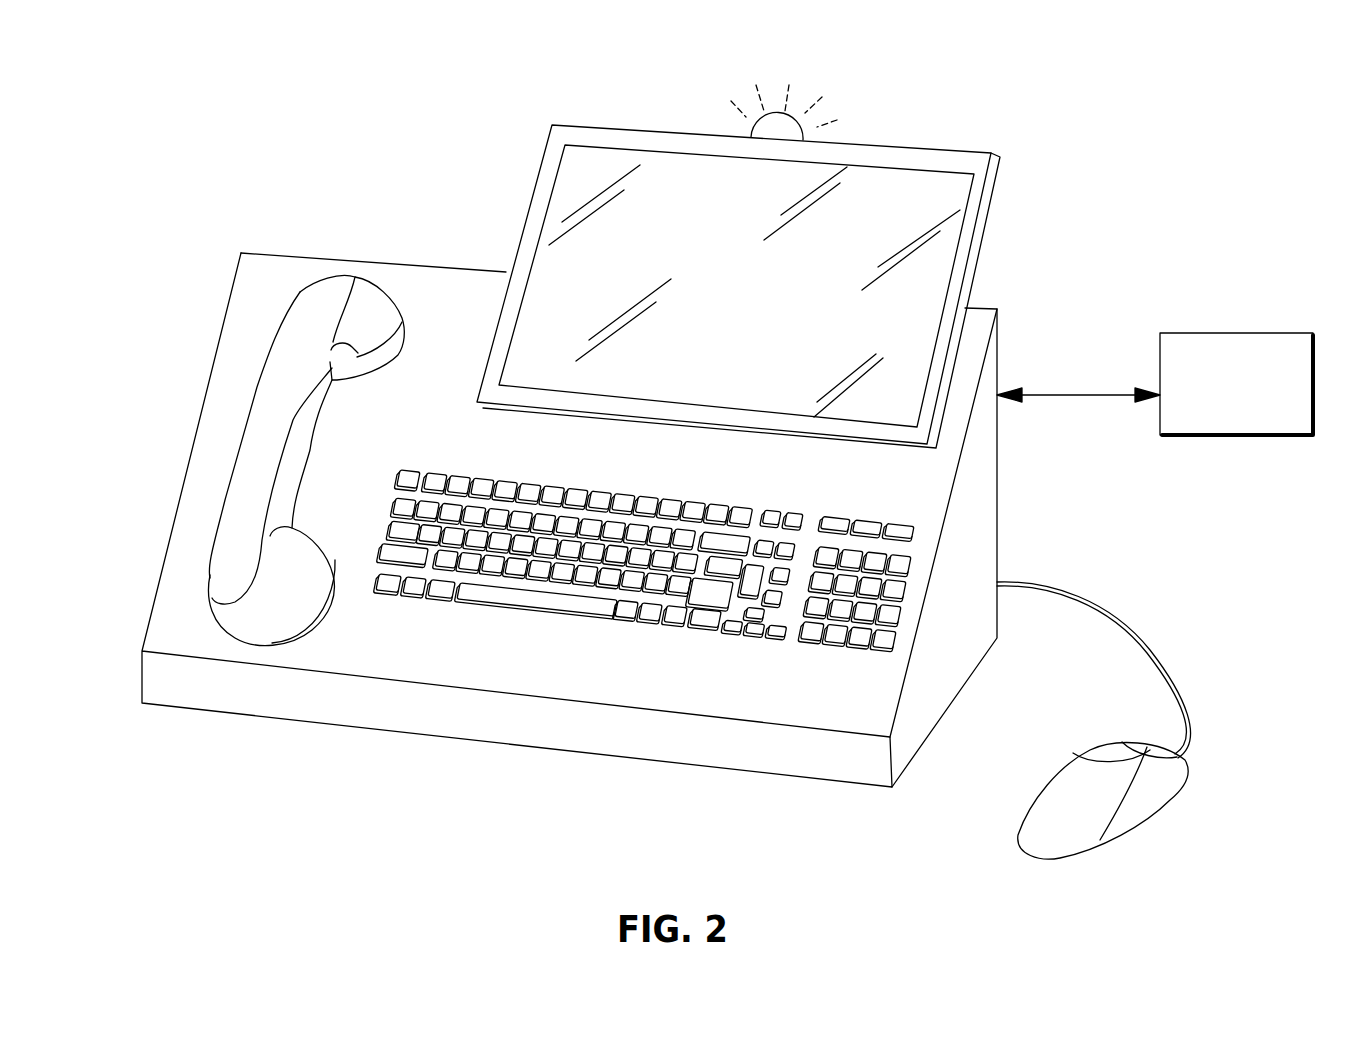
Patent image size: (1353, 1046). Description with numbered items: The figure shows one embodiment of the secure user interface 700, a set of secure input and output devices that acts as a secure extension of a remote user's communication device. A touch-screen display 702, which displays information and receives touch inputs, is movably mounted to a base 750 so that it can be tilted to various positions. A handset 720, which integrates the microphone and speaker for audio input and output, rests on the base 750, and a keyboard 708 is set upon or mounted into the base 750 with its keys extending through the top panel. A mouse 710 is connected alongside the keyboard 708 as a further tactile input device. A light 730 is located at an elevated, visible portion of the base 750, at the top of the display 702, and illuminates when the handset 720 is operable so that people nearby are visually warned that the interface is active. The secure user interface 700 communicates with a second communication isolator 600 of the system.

The secure user interface 700 is at (652, 494).
The touch-screen display 702 is at (1013, 203).
The keyboard 708 is at (701, 690).
The mouse 710 is at (1114, 866).
The handset 720 is at (228, 436).
The light 730 is at (790, 117).
The base 750 is at (910, 737).
The second communication isolator 600 is at (1229, 460).